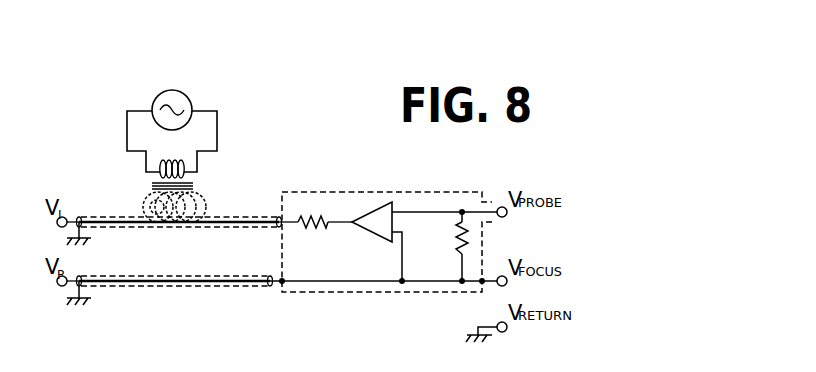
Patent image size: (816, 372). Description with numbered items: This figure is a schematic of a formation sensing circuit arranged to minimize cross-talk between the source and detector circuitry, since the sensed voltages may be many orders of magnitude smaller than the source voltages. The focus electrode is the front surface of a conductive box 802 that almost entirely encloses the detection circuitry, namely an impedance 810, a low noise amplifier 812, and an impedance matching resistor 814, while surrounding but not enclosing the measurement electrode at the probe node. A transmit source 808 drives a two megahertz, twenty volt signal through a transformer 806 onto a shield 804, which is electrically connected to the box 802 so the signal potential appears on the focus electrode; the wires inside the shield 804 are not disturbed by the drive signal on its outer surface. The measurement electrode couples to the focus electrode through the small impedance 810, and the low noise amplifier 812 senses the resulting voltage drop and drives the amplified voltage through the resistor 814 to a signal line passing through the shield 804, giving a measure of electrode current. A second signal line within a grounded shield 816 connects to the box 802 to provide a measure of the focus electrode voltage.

The conductive box 802 is at (337, 293).
The shield 804 is at (253, 215).
The transformer 806 is at (197, 187).
The transmit source 808 is at (190, 100).
The impedance 810 is at (460, 235).
The low noise amplifier 812 is at (372, 230).
The impedance matching resistor 814 is at (322, 228).
The grounded shield 816 is at (167, 288).